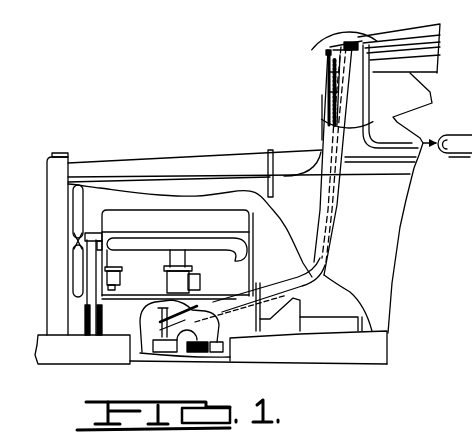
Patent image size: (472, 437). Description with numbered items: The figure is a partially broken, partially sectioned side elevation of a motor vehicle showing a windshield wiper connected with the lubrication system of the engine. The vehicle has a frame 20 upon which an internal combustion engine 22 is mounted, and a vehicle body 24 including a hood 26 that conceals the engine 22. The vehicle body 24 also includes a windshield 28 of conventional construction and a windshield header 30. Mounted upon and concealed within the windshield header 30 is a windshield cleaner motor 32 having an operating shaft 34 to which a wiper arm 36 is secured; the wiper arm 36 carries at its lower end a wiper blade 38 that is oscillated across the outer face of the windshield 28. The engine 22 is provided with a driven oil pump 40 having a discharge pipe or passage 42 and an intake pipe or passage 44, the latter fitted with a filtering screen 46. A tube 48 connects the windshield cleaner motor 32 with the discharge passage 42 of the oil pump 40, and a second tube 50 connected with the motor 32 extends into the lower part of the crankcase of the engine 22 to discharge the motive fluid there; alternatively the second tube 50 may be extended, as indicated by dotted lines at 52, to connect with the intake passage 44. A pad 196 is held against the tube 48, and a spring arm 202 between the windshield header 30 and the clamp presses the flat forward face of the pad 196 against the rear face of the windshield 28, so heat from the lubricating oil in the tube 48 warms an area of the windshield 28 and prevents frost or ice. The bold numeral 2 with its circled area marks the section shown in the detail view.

The section line for FIG. 2 is at (372, 45).
The frame 20 is at (353, 364).
The internal combustion engine 22 is at (139, 208).
The vehicle body 24 is at (399, 283).
The hood 26 is at (170, 159).
The windshield 28 is at (343, 125).
The windshield header 30 is at (361, 42).
The windshield cleaner motor 32 is at (340, 50).
The operating shaft 34 is at (328, 53).
The wiper arm 36 is at (328, 72).
The wiper blade 38 is at (329, 92).
The oil pump 40 is at (163, 350).
The discharge pipe or passage 42 is at (144, 343).
The intake pipe or passage 44 is at (226, 349).
The filtering screen 46 is at (201, 353).
The tube 48 is at (298, 276).
The second tube 50 is at (259, 303).
The extension of the tube 52 is at (217, 322).
The pad 196 is at (373, 78).
The spring arm 202 is at (430, 70).